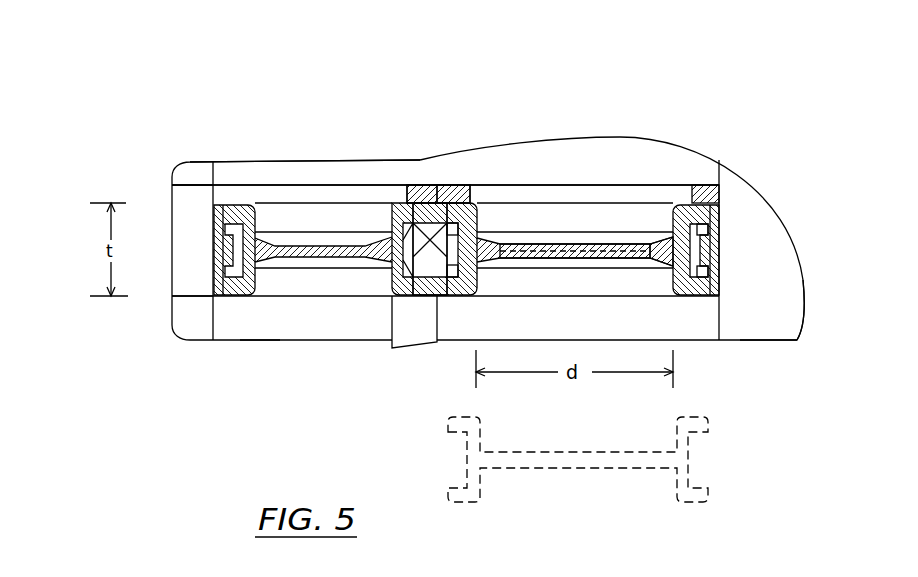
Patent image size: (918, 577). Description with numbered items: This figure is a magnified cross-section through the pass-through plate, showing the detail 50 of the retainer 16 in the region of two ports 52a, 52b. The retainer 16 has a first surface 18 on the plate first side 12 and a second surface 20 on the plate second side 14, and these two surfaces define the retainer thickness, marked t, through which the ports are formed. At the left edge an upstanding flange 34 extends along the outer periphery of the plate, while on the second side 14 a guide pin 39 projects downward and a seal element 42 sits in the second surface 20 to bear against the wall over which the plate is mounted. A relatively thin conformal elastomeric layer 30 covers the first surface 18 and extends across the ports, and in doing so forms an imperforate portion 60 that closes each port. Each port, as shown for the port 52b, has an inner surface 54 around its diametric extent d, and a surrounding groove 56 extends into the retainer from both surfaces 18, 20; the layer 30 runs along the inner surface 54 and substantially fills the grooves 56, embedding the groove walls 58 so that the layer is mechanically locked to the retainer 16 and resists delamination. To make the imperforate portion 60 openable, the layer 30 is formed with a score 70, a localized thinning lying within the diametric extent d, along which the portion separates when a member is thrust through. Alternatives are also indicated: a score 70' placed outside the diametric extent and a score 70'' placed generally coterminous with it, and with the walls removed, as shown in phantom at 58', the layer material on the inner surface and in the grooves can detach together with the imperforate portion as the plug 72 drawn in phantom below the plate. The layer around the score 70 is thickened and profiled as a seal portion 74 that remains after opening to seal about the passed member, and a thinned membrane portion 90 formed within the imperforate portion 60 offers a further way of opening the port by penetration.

The first side 12 is at (285, 120).
The second side 14 is at (260, 357).
The retainer 16 is at (720, 246).
The first surface 18 is at (369, 167).
The second surface 20 is at (325, 297).
The elastomeric layer 30 is at (430, 187).
The flange 34 is at (197, 162).
The guide pin 39 is at (403, 349).
The seal element 42 is at (755, 341).
The detail 50 is at (675, 66).
The port 52a is at (316, 222).
The port 52b is at (574, 220).
The inner surface 54 is at (470, 263).
The groove 56 is at (457, 213).
The wall 58 is at (494, 244).
The removed wall 58' is at (733, 244).
The imperforate portion 60 is at (632, 242).
The score 70 is at (464, 237).
The score 70' is at (430, 146).
The score 70'' is at (613, 146).
The plug 72 is at (587, 452).
The seal portion 74 is at (663, 268).
The membrane portion 90 is at (597, 240).